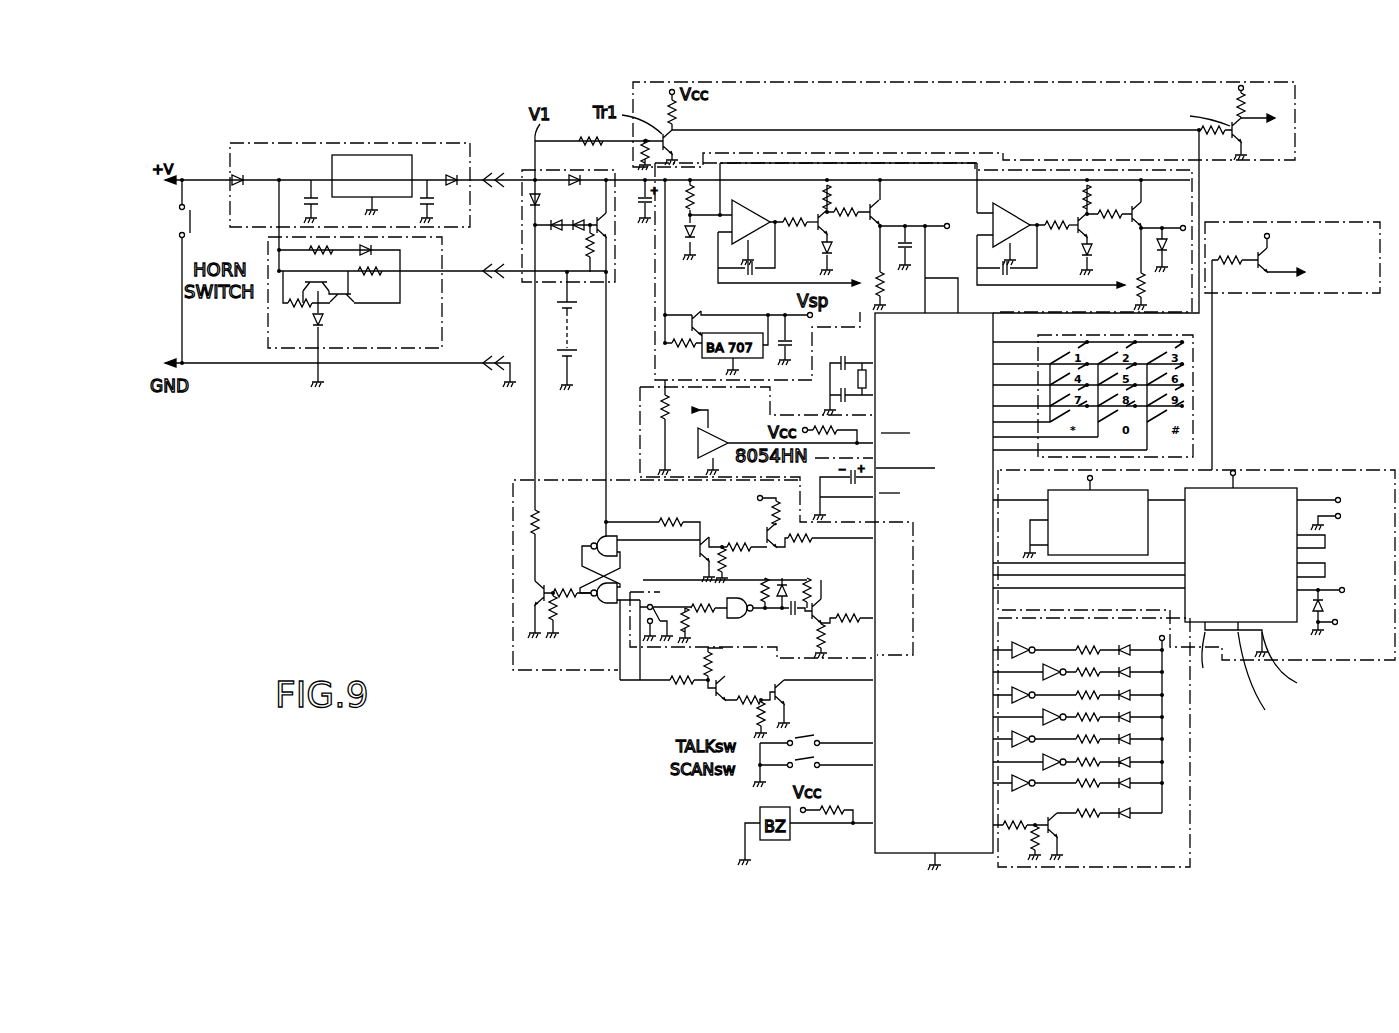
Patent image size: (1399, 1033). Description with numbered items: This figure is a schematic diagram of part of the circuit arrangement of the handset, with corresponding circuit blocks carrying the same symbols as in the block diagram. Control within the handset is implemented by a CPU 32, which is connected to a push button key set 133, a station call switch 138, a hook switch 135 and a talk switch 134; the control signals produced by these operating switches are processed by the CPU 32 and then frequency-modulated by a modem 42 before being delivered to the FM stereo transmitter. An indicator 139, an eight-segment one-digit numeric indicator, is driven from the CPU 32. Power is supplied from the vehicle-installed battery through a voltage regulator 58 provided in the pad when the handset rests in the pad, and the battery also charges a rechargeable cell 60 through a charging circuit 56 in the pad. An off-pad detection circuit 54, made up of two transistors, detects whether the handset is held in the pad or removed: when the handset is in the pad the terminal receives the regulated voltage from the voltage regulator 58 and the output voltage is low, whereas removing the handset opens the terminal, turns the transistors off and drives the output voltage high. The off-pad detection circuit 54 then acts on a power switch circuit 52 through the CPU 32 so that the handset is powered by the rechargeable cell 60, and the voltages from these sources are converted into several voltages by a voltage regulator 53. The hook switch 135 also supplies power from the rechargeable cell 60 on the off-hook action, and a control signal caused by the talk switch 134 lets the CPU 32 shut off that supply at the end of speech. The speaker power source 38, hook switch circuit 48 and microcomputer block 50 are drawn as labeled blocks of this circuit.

The voltage regulator 58 is at (470, 143).
The charging circuit 56 is at (445, 240).
The power switch circuit 52 is at (618, 248).
The rechargeable cell 60 is at (575, 308).
The hook switch circuit 48 is at (513, 480).
The hook switch 135 is at (640, 683).
The talk switch 134 is at (820, 740).
The station call switch 138 is at (822, 768).
The CPU 32 is at (1003, 313).
The microcomputer 50 is at (912, 413).
The push button key set 133 is at (1205, 455).
The modem 42 is at (1392, 470).
The indicator 139 is at (1192, 867).
The voltage regulator 53 is at (1200, 312).
The speaker power source 38 is at (1378, 293).
The off-pad detection circuit 54 is at (1290, 92).